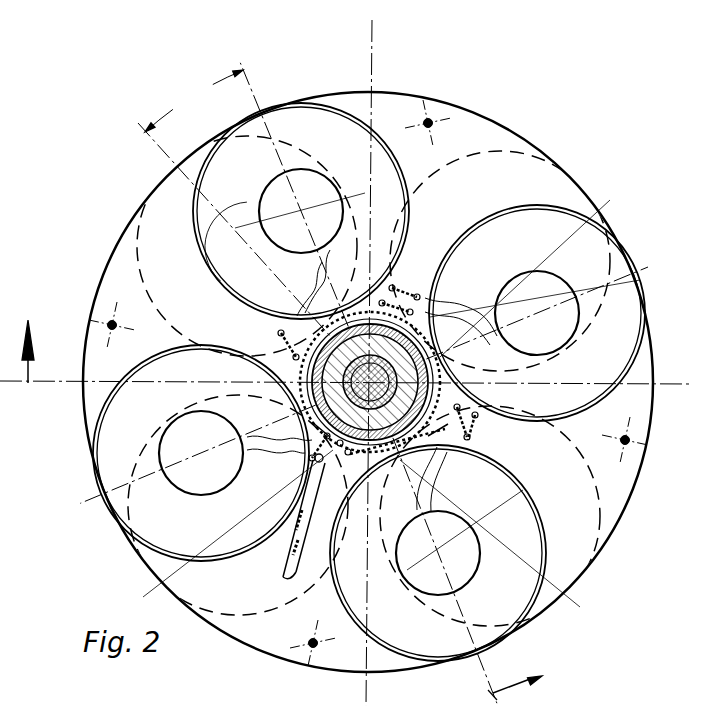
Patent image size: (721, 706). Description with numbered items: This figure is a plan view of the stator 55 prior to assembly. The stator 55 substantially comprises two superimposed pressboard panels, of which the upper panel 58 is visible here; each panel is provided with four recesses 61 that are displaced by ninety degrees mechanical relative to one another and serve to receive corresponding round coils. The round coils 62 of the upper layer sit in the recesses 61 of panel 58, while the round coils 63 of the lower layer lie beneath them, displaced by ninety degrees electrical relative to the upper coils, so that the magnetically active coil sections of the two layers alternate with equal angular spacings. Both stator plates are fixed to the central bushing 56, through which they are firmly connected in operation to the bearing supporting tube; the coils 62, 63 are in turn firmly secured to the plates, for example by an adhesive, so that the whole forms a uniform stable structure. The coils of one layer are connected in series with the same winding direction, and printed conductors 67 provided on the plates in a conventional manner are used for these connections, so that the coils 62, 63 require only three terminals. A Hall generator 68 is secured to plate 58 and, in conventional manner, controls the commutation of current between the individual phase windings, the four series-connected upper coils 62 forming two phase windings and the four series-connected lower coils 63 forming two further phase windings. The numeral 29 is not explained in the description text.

The shaft 29 is at (357, 353).
The stator 55 is at (449, 78).
The central bushing 56 is at (445, 372).
The pressboard panel 58 is at (490, 126).
The recesses 61 is at (351, 112).
The round coils 62 is at (294, 112).
The round coils 63 is at (219, 135).
The printed conductors 67 is at (474, 426).
The Hall generator 68 is at (275, 557).